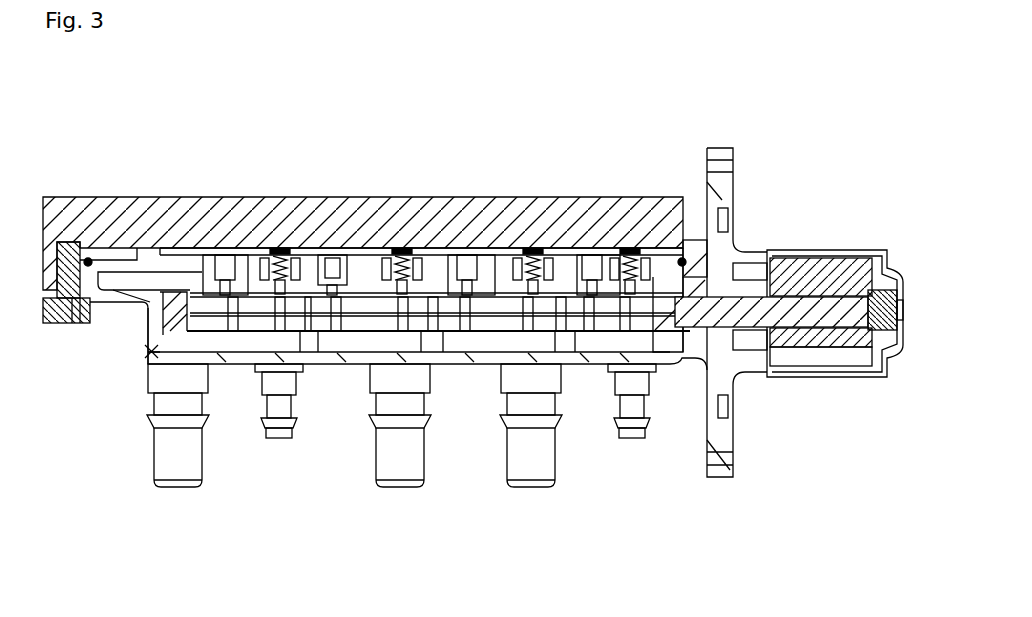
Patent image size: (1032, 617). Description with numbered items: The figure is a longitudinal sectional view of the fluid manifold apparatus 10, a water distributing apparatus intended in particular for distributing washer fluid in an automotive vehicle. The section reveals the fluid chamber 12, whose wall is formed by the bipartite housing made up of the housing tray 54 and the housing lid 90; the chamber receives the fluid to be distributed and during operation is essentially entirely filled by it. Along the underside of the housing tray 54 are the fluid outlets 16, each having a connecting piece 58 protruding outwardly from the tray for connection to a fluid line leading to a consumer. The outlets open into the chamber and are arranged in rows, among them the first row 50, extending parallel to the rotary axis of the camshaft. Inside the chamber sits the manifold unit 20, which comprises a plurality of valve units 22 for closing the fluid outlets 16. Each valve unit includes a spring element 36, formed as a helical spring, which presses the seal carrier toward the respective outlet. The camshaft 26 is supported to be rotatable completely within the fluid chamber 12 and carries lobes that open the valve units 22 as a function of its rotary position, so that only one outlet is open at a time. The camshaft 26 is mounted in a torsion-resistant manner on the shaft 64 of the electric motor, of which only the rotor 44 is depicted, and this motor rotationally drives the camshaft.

The fluid manifold apparatus 10 is at (755, 140).
The fluid chamber 12 is at (163, 260).
The fluid outlets 16 is at (545, 480).
The manifold unit 20 is at (567, 242).
The valve units 22 is at (417, 247).
The camshaft 26 is at (357, 310).
The spring element 36 is at (307, 248).
The rotor 44 is at (820, 258).
The first row 50 is at (233, 305).
The housing tray 54 is at (152, 362).
The connecting piece 58 is at (525, 450).
The shaft 64 is at (693, 300).
The housing lid 90 is at (100, 227).